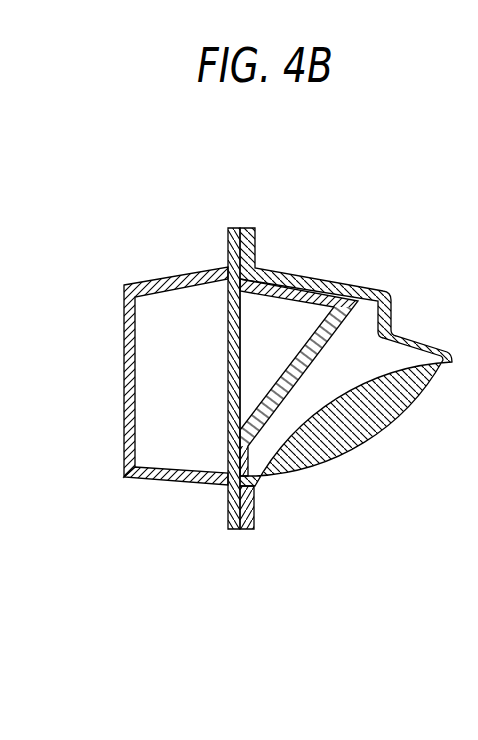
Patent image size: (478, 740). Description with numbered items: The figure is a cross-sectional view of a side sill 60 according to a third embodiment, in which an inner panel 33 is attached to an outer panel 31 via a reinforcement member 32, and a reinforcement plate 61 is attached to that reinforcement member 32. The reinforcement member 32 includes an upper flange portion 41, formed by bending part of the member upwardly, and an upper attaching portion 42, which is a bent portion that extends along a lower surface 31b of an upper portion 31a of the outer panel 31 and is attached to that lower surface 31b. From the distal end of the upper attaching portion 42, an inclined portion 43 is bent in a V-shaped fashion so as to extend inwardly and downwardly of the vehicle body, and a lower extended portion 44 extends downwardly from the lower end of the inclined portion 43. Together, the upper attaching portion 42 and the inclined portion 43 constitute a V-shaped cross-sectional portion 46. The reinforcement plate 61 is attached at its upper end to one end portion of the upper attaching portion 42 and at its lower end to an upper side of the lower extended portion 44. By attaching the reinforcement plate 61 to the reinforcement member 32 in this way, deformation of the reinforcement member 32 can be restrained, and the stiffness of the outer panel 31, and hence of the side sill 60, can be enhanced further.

The outer panel 31 is at (312, 376).
The upper portion of the outer panel 31a is at (357, 289).
The lower surface of the upper portion 31b is at (301, 278).
The reinforcement member 32 is at (340, 358).
The inner panel 33 is at (160, 486).
The upper flange portion 41 is at (208, 333).
The upper attaching portion 42 is at (283, 300).
The inclined portion 43 is at (326, 377).
The lower extended portion 44 is at (250, 457).
The V-shaped cross-sectional portion 46 is at (256, 377).
The side sill 60 is at (176, 372).
The reinforcement plate 61 is at (227, 330).